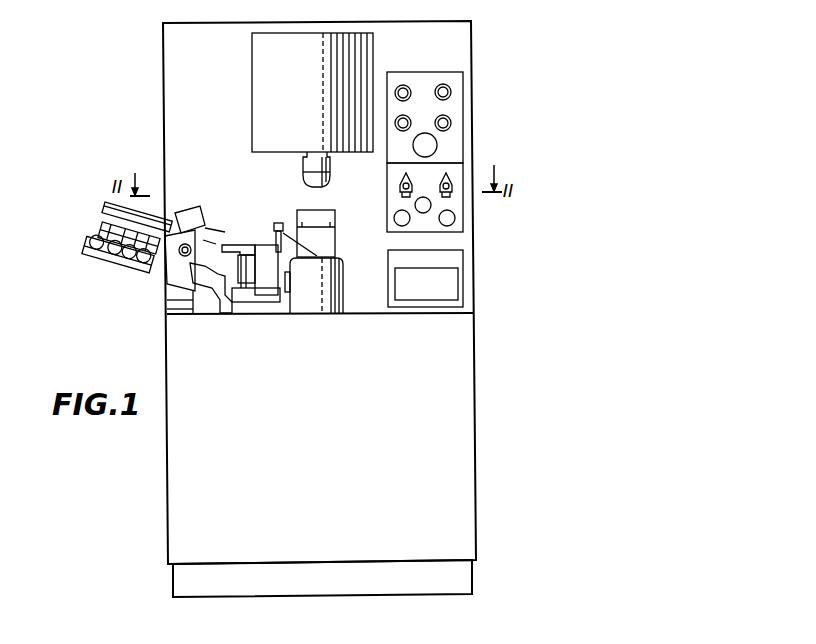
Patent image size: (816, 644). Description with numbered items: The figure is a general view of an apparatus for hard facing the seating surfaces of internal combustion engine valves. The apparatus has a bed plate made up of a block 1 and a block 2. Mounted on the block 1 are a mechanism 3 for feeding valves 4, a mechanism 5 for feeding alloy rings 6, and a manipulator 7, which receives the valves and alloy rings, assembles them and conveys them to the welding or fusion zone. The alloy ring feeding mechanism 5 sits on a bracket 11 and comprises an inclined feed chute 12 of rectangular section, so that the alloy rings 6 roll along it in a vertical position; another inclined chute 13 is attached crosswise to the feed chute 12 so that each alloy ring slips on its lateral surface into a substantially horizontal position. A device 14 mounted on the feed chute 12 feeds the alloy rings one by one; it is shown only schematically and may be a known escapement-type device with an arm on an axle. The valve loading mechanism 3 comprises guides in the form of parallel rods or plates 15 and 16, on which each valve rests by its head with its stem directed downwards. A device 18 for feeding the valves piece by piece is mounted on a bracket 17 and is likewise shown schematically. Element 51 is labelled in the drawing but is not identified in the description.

The block 1 is at (467, 389).
The block 2 is at (462, 57).
The mechanism for feeding valves 3 is at (103, 203).
The valves 4 is at (95, 237).
The mechanism for feeding alloy rings 5 is at (110, 266).
The alloy rings 6 is at (95, 258).
The manipulator 7 is at (360, 298).
The bracket 11 is at (186, 302).
The inclined feed chute 12 is at (140, 264).
The inclined chute 13 is at (216, 302).
The device for feeding alloy rings one by one 14 is at (173, 215).
The guide rod or plate 15 is at (110, 228).
The guide rod or plate 16 is at (113, 238).
The bracket 17 is at (190, 214).
The device for feeding valves piece by piece 18 is at (201, 219).
The clamp unit 51 is at (277, 222).